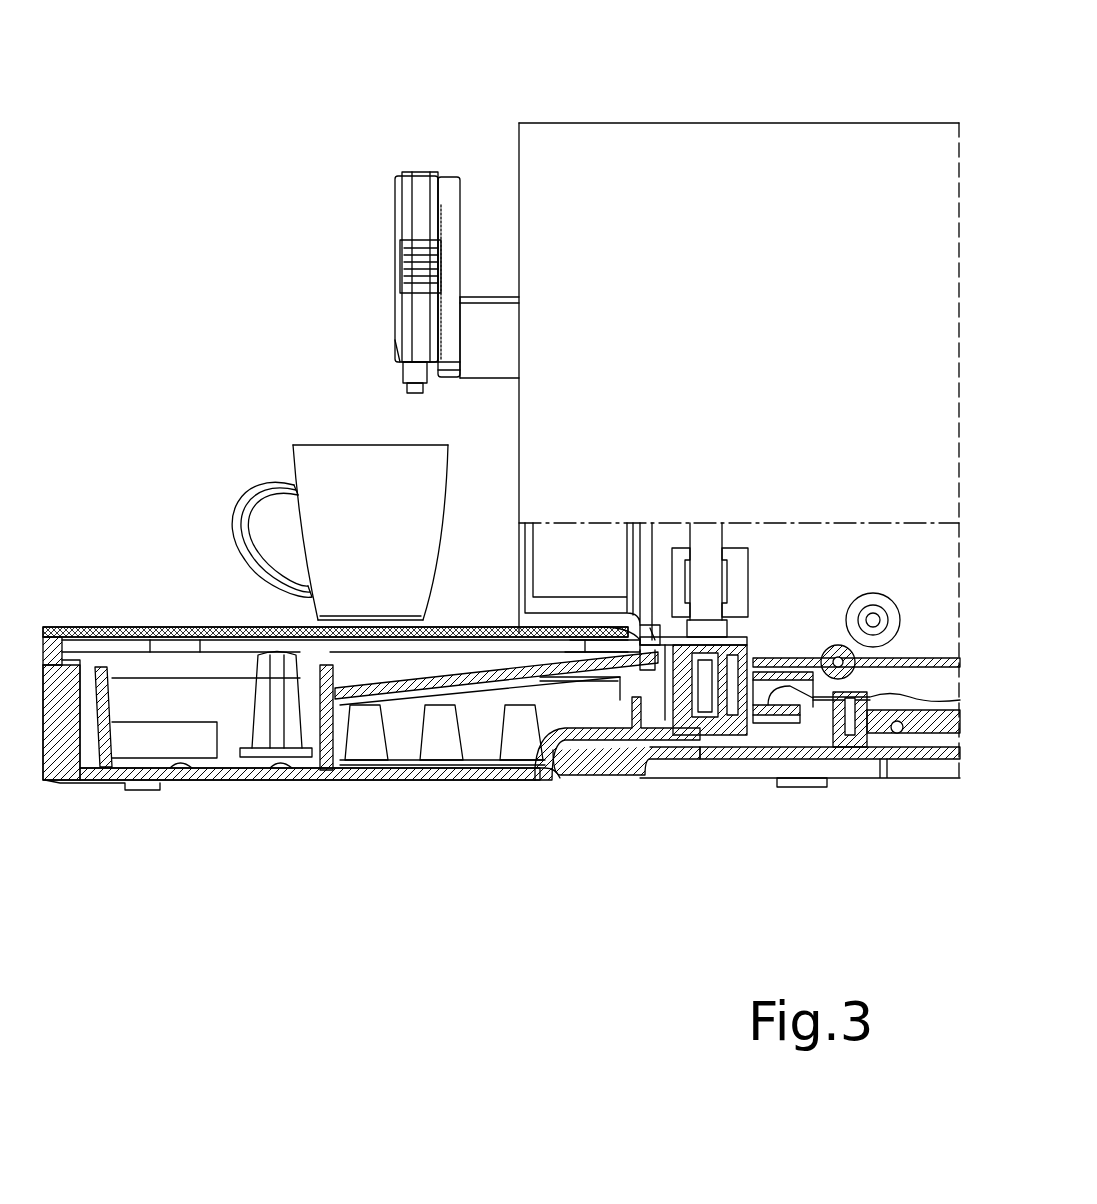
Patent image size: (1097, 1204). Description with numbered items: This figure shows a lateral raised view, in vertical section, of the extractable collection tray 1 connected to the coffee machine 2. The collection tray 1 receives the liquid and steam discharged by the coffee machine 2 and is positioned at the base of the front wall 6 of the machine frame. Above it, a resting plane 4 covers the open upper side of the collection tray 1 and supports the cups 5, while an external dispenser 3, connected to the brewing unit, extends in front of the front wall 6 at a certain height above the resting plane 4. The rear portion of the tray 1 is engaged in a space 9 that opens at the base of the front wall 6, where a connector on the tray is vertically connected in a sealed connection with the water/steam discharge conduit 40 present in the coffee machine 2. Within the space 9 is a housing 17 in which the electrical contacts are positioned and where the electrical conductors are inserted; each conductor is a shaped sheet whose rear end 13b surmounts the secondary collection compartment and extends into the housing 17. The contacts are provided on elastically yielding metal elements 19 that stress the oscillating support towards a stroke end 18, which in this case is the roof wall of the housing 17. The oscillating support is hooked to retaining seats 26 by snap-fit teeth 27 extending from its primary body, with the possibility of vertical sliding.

The collection tray 1 is at (82, 790).
The coffee machine 2 is at (880, 103).
The external dispenser 3 is at (395, 350).
The resting plane 4 is at (193, 627).
The cups 5 is at (387, 467).
The front wall 6 is at (519, 418).
The space 9 is at (643, 622).
The rear end 13b is at (800, 688).
The housing 17 is at (805, 702).
The stroke end 18 is at (780, 670).
The elastically yielding metal elements 19 is at (795, 675).
The retaining seats 26 is at (663, 647).
The snap-fit teeth 27 is at (600, 632).
The water/steam discharge conduit 40 is at (707, 543).